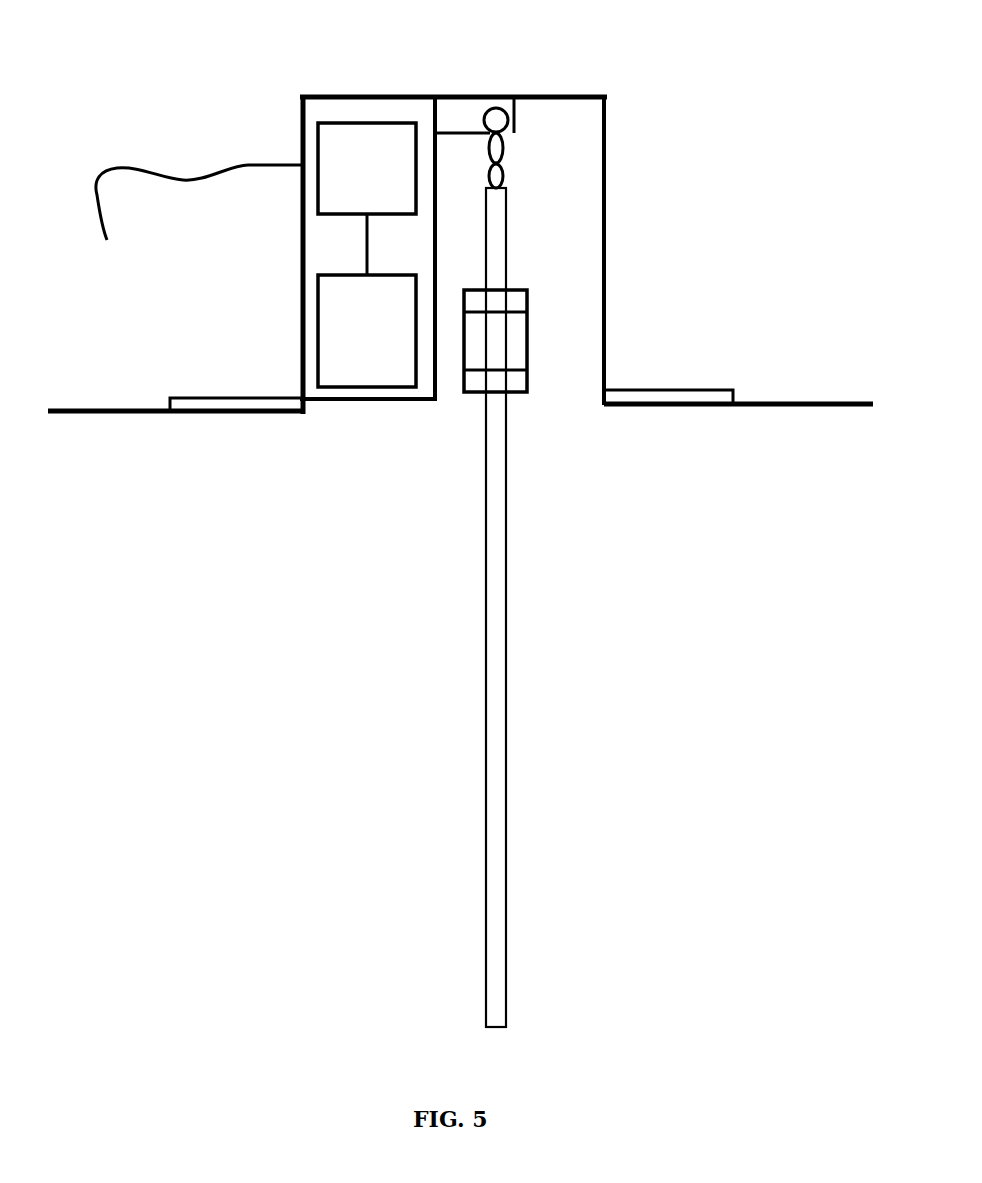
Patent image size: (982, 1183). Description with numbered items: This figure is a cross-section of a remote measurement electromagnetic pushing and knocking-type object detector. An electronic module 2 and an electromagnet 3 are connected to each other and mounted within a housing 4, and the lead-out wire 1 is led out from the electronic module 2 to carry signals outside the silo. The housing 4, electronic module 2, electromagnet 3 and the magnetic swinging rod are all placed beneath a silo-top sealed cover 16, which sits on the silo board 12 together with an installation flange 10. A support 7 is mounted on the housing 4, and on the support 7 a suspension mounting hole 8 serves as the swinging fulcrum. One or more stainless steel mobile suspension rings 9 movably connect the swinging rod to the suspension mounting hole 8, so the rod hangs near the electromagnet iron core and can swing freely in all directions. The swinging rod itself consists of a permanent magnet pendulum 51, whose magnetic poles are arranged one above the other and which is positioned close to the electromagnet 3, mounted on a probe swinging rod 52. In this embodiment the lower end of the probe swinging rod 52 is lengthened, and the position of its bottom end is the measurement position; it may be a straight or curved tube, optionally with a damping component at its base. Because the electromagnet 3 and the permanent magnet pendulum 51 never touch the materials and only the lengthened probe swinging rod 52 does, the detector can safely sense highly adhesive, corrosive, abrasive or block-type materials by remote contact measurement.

The lead-out wire 1 is at (218, 168).
The electronic module 2 is at (358, 123).
The electromagnet 3 is at (320, 337).
The housing 4 is at (403, 400).
The support 7 is at (465, 108).
The suspension mounting hole 8 is at (513, 93).
The mobile suspension rings 9 is at (507, 166).
The installation flange 10 is at (660, 388).
The silo board 12 is at (793, 399).
The sealed cover 16 is at (598, 93).
The permanent magnet pendulum 51 is at (528, 330).
The probe swinging rod 52 is at (507, 245).